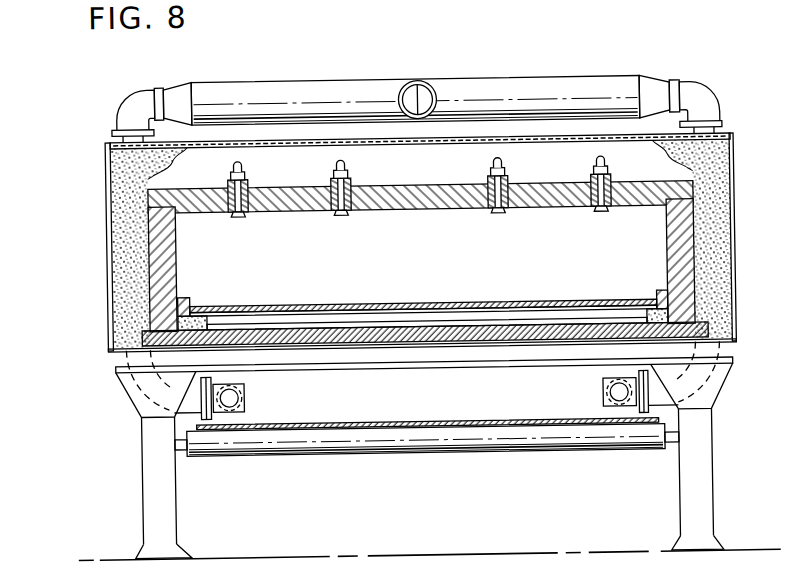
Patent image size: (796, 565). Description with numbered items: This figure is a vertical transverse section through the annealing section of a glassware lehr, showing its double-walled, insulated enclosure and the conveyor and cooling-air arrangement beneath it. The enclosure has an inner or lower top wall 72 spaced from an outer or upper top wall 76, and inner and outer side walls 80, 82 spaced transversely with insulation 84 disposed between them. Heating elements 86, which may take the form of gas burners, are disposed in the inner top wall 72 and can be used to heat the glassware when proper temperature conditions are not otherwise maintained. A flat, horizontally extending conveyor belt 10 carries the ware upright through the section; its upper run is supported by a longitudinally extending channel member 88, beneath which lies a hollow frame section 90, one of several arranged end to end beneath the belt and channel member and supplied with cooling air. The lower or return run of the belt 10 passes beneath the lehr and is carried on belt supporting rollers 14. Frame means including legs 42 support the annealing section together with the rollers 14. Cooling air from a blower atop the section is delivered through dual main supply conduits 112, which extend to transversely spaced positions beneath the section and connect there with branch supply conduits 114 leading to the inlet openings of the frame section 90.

The conveyor belt 10 is at (468, 304).
The belt supporting rollers 14 is at (398, 440).
The legs 42 is at (148, 481).
The inner top wall 72 is at (433, 209).
The outer top wall 76 is at (302, 143).
The inner side wall 80 is at (167, 259).
The outer side wall 82 is at (108, 257).
The insulation 84 is at (133, 210).
The heating elements 86 is at (340, 212).
The channel member 88 is at (347, 312).
The hollow frame section 90 is at (511, 327).
The main supply conduits 112 is at (138, 98).
The branch supply conduits 114 is at (244, 390).